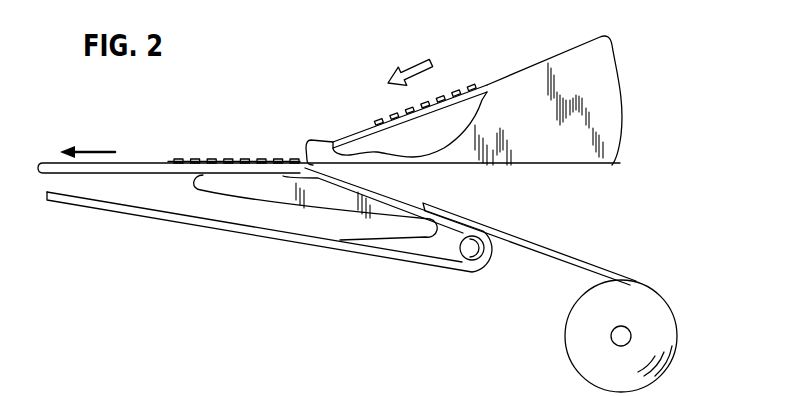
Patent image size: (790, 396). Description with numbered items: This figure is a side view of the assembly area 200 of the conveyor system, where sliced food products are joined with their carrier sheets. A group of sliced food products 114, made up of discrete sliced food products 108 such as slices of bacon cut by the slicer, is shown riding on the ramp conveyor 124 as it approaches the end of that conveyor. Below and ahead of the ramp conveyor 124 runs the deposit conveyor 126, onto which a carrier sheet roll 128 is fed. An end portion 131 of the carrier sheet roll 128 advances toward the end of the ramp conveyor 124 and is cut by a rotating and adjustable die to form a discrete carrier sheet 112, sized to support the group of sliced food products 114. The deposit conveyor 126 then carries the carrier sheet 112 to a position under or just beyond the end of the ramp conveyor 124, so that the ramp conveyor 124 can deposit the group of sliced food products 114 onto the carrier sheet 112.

The assembly area 200 is at (308, 54).
The sliced food products 108 is at (377, 121).
The carrier sheet 112 is at (167, 163).
The group of sliced food products 114 is at (290, 154).
The ramp conveyor 124 is at (517, 68).
The deposit conveyor 126 is at (128, 164).
The carrier sheet roll 128 is at (677, 338).
The end portion of the carrier sheet roll 131 is at (447, 206).